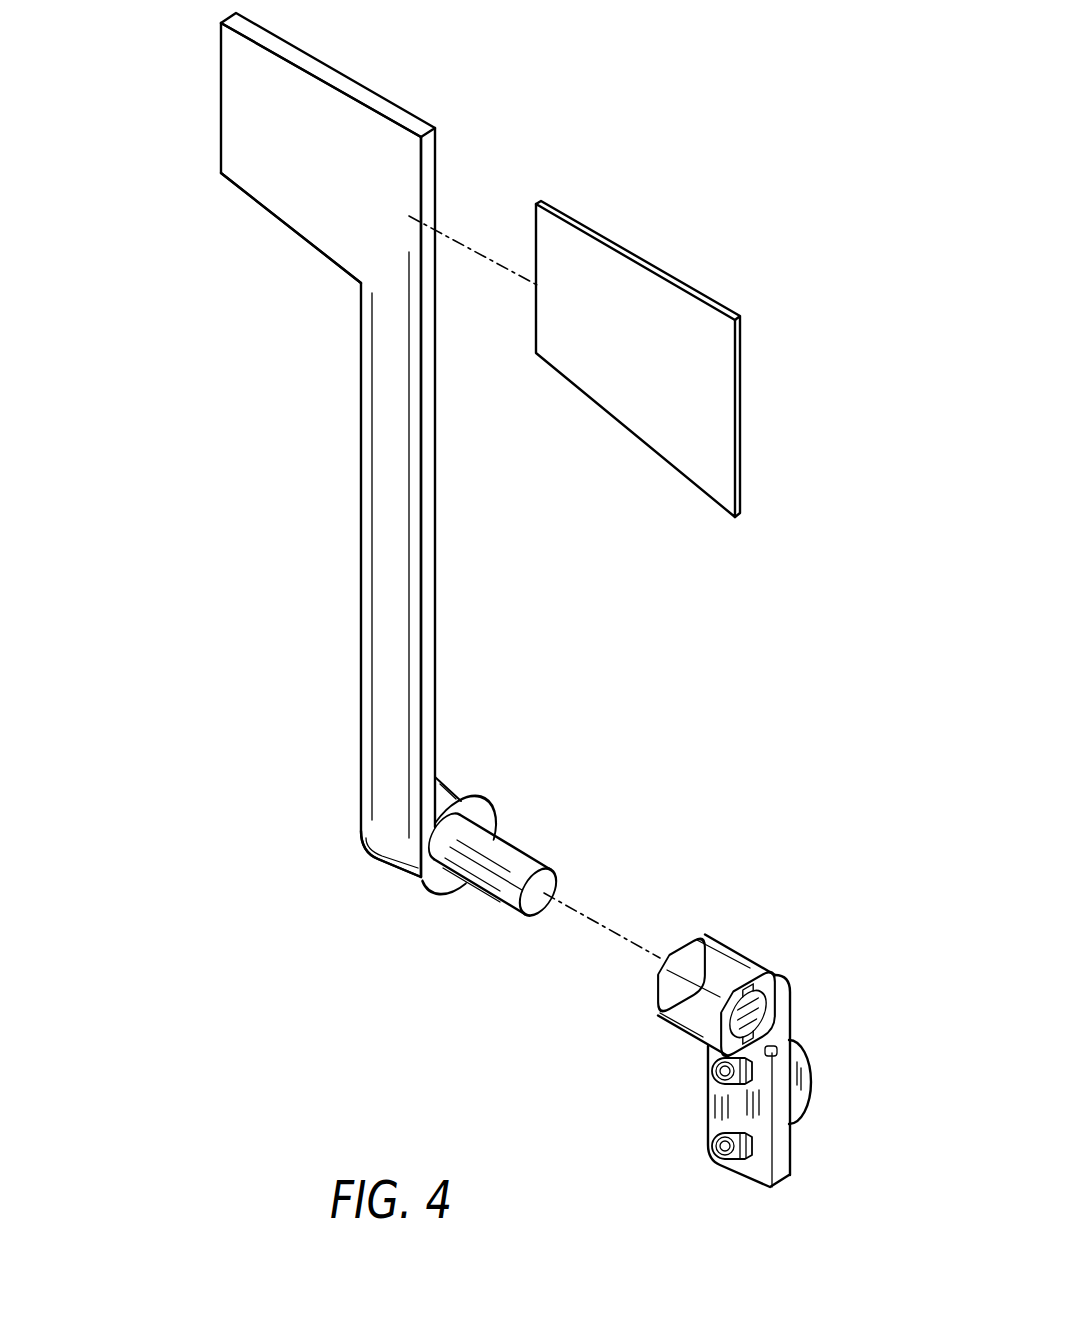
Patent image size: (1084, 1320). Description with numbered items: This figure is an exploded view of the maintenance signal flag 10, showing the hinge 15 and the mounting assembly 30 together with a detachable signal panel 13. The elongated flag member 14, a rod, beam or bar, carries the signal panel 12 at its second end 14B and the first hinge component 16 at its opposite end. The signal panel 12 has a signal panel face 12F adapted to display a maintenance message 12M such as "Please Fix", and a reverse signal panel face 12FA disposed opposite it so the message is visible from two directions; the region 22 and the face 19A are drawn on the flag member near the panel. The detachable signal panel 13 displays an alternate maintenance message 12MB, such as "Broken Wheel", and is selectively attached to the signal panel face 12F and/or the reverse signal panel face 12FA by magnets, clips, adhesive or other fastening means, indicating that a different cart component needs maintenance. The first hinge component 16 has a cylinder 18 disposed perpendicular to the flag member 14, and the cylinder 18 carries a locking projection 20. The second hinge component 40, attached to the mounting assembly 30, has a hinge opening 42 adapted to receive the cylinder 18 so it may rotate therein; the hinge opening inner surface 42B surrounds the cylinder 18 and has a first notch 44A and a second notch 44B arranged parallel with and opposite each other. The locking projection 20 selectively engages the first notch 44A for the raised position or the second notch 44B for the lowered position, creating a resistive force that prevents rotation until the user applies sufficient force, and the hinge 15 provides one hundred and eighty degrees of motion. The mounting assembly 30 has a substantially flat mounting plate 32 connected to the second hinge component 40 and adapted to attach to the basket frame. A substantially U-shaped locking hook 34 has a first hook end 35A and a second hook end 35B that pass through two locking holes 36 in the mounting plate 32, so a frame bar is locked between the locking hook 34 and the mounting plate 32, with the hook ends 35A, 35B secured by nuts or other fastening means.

The maintenance signal flag 10 is at (243, 992).
The signal panel 12 is at (423, 128).
The signal panel face 12F is at (320, 88).
The reverse signal panel face 12FA is at (280, 38).
The maintenance message 12M is at (265, 117).
The alternate maintenance message 12MB is at (683, 413).
The detachable signal panel 13 is at (742, 312).
The flag member 14 is at (430, 558).
The second end 14B is at (361, 828).
The hinge 15 is at (443, 897).
The first hinge component 16 is at (453, 784).
The cylinder 18 is at (561, 891).
The side face of post 19A is at (427, 333).
The locking projection 20 is at (520, 858).
The sign head 22 is at (333, 227).
The mounting assembly 30 is at (743, 1180).
The mounting plate 32 is at (757, 1123).
The locking hook 34 is at (808, 1087).
The first hook end 35A is at (718, 1080).
The second hook end 35B is at (715, 1158).
The locking holes 36 is at (757, 1110).
The second hinge component 40 is at (733, 953).
The hinge opening 42 is at (760, 1033).
The hinge opening inner surface 42B is at (748, 1010).
The first notch 44A is at (757, 968).
The second notch 44B is at (760, 1053).